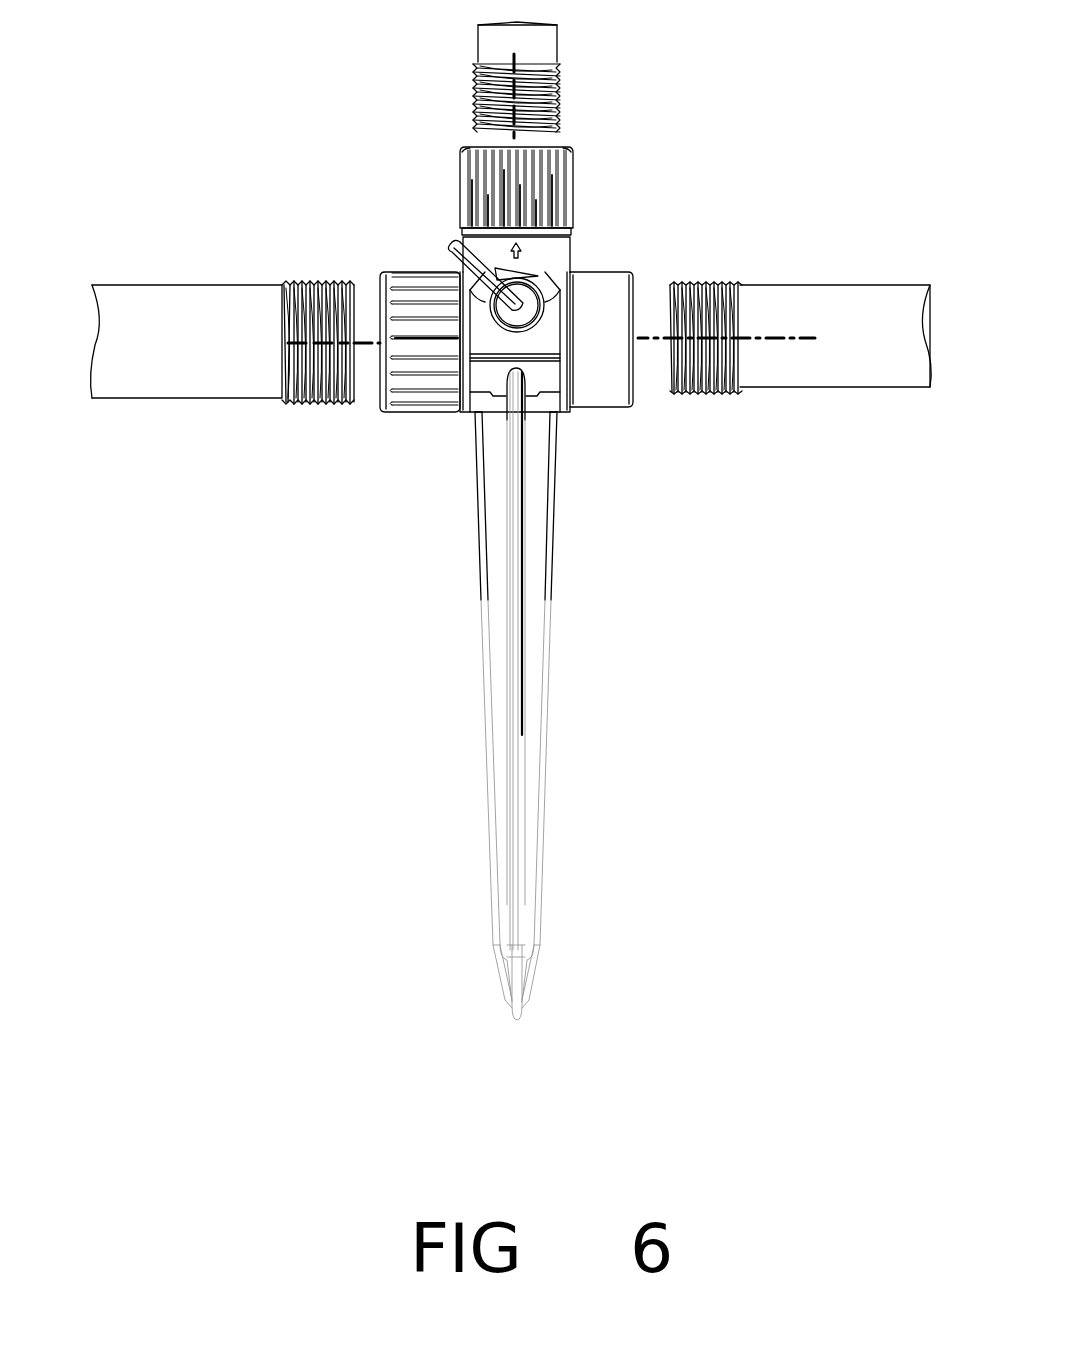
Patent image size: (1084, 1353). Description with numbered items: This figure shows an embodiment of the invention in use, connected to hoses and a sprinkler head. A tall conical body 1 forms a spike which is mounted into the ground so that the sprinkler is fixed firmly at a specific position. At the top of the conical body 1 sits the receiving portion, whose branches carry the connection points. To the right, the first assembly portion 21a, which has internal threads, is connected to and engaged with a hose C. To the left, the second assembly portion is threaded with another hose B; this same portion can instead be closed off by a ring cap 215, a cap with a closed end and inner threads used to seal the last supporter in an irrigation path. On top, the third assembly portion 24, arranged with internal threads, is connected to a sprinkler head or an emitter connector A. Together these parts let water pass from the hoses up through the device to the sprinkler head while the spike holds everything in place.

The conical body 1 is at (583, 598).
The third assembly portion 24 is at (465, 200).
The ring cap 215 is at (397, 278).
The first assembly portion 21a is at (623, 418).
The emitter connector A is at (556, 82).
The hose B is at (169, 306).
The hose C is at (800, 304).